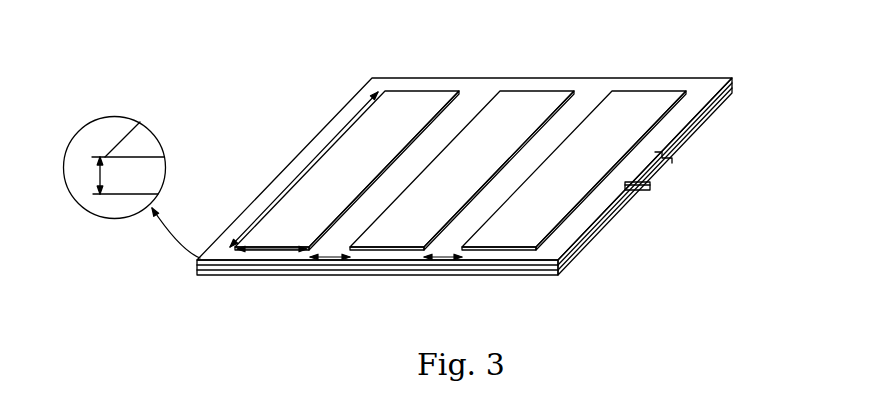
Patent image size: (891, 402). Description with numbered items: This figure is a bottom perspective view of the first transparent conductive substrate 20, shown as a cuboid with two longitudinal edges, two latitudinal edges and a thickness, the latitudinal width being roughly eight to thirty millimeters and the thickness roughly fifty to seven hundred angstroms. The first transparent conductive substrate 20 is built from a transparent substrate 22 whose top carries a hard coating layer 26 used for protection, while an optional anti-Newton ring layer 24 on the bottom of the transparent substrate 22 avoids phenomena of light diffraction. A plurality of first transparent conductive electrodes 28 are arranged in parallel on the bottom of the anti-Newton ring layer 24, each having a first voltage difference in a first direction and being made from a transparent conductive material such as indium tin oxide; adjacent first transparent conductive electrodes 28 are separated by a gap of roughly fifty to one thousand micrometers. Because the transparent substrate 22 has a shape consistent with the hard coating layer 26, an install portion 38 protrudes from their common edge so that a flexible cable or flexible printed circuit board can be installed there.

The first transparent conductive substrate 20 is at (253, 158).
The transparent substrate 22 is at (723, 100).
The anti-Newton ring layer 24 is at (712, 85).
The hard coating layer 26 is at (700, 127).
The first transparent conductive electrodes 28 is at (418, 100).
The install portion 38 is at (652, 181).